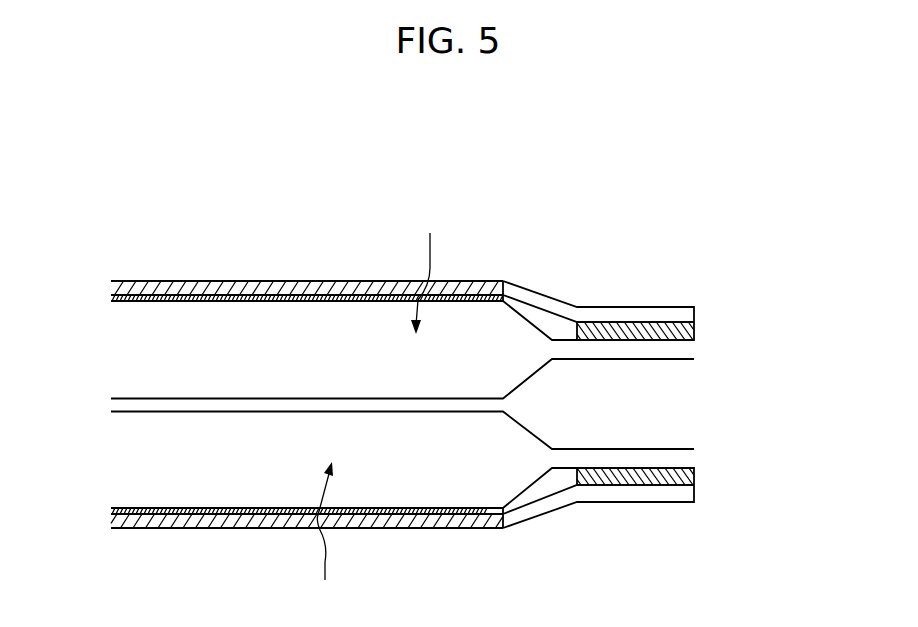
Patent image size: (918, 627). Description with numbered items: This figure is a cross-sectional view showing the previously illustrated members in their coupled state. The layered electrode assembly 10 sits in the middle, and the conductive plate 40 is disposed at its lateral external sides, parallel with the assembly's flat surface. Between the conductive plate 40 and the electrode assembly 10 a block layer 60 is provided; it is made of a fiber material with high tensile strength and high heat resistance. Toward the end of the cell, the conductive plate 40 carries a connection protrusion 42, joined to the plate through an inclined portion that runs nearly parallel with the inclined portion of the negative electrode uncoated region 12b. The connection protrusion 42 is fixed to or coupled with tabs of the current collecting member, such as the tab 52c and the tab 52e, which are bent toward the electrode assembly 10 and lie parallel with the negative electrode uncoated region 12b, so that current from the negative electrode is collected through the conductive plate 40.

The electrode assembly 10 is at (377, 407).
The negative electrode uncoated region 12b is at (678, 351).
The conductive plate 40 is at (304, 290).
The connection protrusion 42 is at (611, 306).
The tab 52c is at (685, 326).
The lower connecting pad 52e is at (683, 477).
The block layer 60 is at (213, 298).